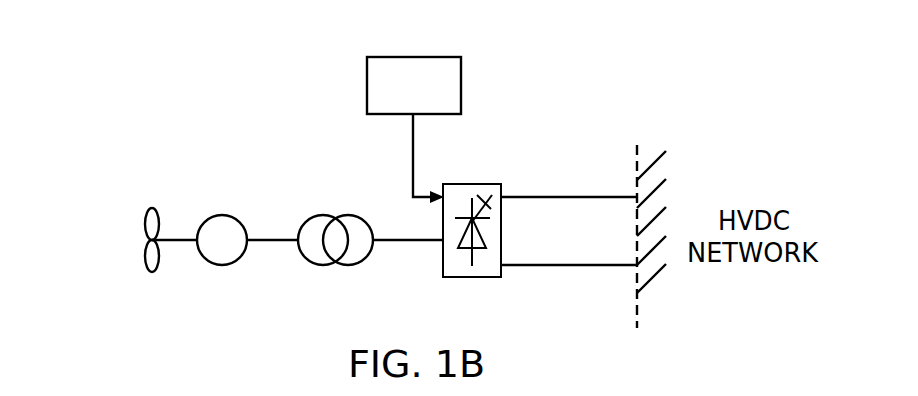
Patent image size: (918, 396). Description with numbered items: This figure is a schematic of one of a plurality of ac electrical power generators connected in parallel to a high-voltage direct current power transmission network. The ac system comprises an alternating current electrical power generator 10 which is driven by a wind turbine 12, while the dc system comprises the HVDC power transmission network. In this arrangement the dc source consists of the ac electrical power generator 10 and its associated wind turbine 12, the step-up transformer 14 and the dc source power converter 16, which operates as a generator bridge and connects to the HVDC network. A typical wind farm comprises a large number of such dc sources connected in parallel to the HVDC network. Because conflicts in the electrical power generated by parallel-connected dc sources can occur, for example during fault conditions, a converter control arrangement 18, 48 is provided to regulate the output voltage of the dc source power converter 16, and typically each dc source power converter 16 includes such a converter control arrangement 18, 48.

The ac electrical power generator 10 is at (222, 213).
The wind turbine 12 is at (150, 206).
The step-up transformer 14 is at (322, 213).
The dc source power converter 16 is at (472, 183).
The converter control arrangement 18 is at (410, 80).
The converter control arrangement 48 is at (414, 60).